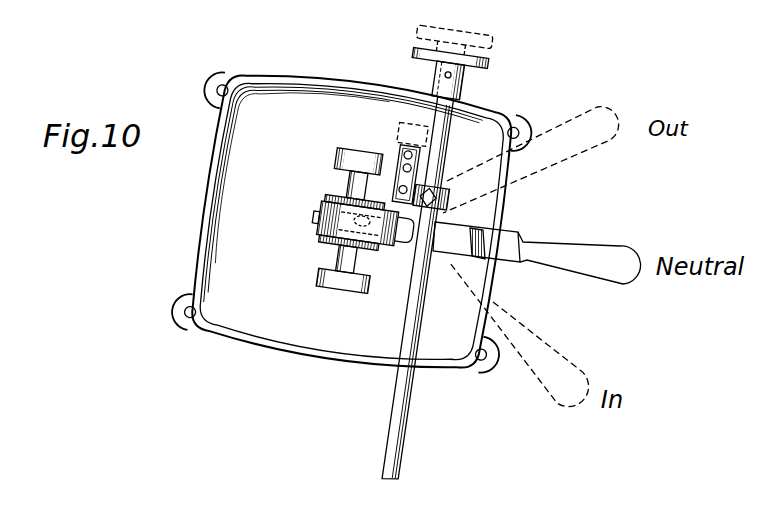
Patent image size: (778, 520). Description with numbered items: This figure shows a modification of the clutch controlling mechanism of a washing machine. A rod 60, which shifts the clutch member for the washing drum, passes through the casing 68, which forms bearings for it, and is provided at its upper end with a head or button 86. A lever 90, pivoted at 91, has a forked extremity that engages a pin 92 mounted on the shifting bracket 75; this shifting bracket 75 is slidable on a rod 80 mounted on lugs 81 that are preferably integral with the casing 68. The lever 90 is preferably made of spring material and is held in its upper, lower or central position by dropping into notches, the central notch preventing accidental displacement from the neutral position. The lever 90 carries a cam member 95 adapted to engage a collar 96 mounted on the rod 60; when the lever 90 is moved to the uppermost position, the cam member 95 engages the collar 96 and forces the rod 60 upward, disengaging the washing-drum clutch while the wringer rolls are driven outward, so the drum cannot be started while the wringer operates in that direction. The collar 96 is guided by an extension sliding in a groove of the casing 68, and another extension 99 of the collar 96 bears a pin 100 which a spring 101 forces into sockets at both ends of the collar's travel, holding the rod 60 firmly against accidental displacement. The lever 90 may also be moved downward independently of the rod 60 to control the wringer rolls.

The rod 60 is at (392, 407).
The casing 68 is at (287, 74).
The shifting bracket 75 is at (307, 212).
The rod 80 is at (350, 188).
The lugs 81 is at (338, 150).
The head or button 86 is at (518, 107).
The lever 90 is at (585, 247).
The pivot 91 is at (383, 240).
The pin 92 is at (338, 217).
The cam member 95 is at (441, 218).
The collar 96 is at (449, 199).
The extension 99 is at (424, 153).
The pin 100 is at (398, 160).
The spring 101 is at (405, 124).